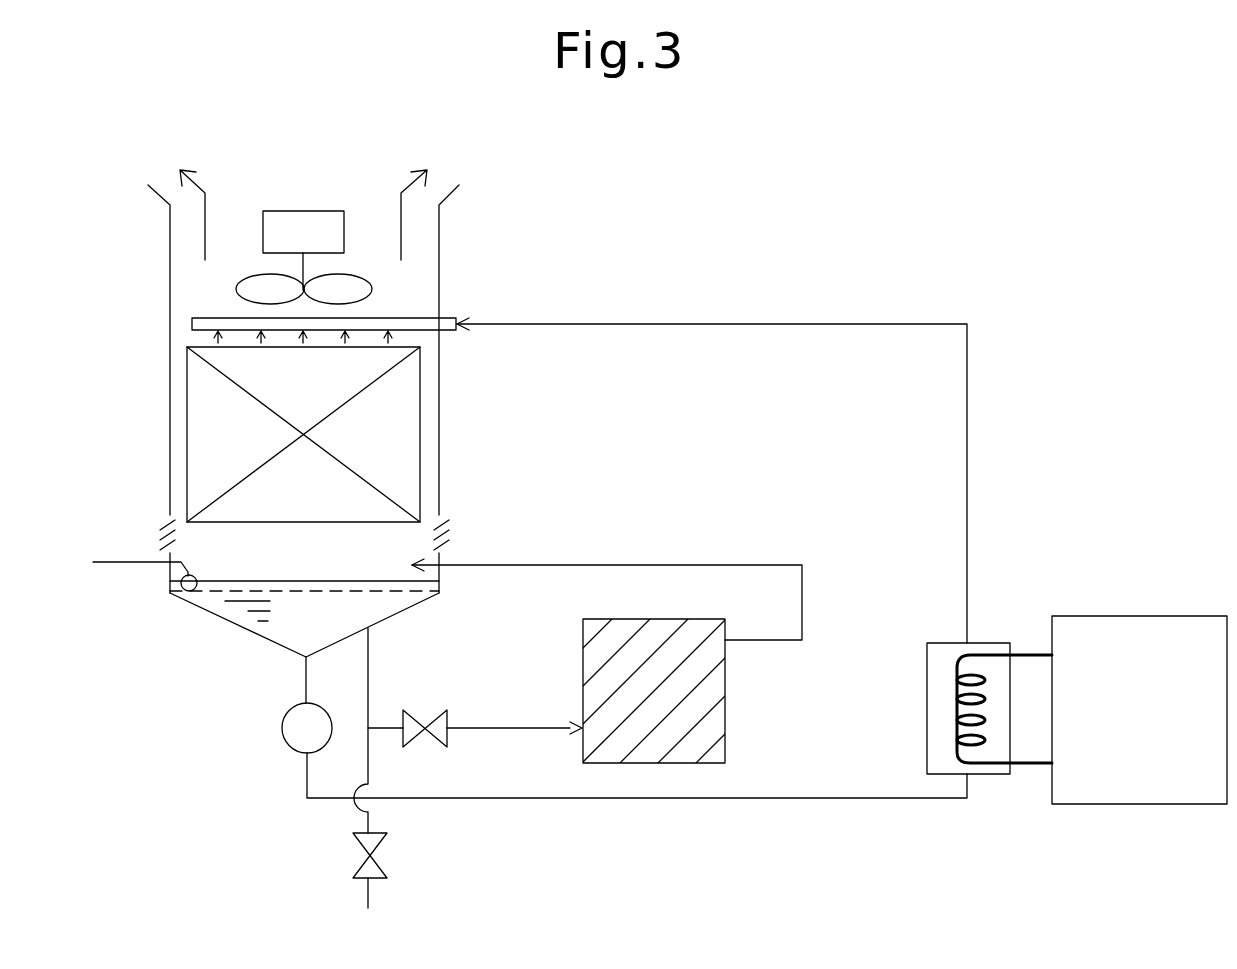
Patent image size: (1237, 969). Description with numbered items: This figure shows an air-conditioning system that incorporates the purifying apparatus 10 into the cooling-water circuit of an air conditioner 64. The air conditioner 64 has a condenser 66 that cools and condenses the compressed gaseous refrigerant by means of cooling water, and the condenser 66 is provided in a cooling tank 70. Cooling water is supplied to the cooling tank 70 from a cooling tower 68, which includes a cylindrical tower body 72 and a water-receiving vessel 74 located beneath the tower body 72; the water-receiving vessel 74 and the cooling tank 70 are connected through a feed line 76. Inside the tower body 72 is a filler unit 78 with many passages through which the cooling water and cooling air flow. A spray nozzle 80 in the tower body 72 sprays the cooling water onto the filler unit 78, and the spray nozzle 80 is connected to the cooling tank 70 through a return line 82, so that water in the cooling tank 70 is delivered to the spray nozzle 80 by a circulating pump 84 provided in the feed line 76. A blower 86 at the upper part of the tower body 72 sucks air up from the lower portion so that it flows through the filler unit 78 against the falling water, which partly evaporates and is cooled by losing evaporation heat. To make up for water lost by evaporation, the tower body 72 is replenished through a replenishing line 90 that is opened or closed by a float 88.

The purifying apparatus 10 is at (725, 710).
The air conditioner 64 is at (1127, 616).
The condenser 66 is at (953, 683).
The cooling tower 68 is at (565, 257).
The cooling tank 70 is at (927, 718).
The tower body 72 is at (439, 375).
The water-receiving vessel 74 is at (403, 612).
The feed line 76 is at (650, 798).
The filler unit 78 is at (420, 440).
The spray nozzle 80 is at (220, 315).
The return line 82 is at (777, 324).
The circulating pump 84 is at (282, 737).
The blower 86 is at (373, 290).
The float 88 is at (196, 577).
The replenishing line 90 is at (133, 562).